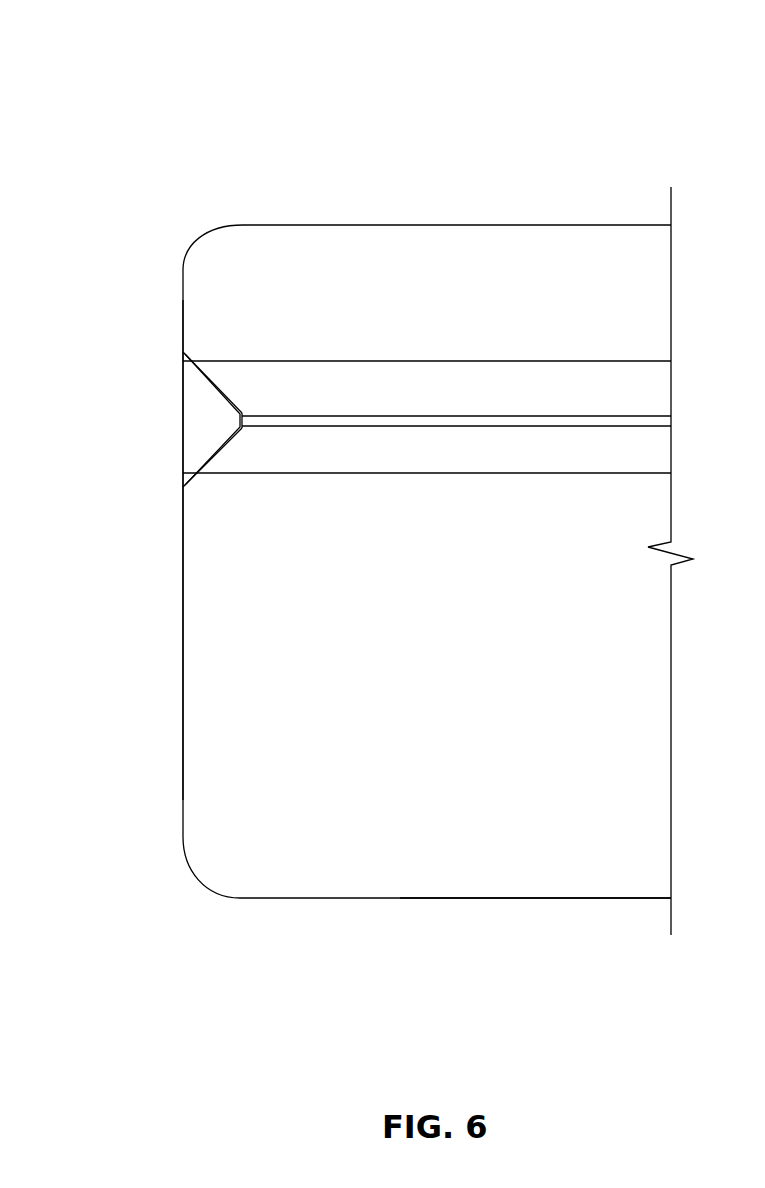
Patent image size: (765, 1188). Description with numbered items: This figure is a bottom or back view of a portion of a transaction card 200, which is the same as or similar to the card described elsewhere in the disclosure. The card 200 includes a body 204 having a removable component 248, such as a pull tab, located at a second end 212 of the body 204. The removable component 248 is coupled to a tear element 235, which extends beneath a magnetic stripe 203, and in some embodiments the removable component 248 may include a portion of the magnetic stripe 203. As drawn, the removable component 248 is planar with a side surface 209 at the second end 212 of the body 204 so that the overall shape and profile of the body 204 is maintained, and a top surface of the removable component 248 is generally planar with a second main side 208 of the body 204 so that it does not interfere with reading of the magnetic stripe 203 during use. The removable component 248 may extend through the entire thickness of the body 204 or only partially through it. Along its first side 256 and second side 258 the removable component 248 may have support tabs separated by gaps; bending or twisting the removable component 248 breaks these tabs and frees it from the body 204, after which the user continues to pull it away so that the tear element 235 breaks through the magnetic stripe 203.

The card 200 is at (152, 75).
The magnetic stripe 203 is at (547, 372).
The body 204 is at (347, 815).
The second main side 208 is at (467, 865).
The side surface 209 is at (183, 655).
The second end 212 is at (210, 778).
The tear element 235 is at (345, 415).
The removable component 248 is at (212, 413).
The first side 256 is at (186, 357).
The second side 258 is at (218, 452).